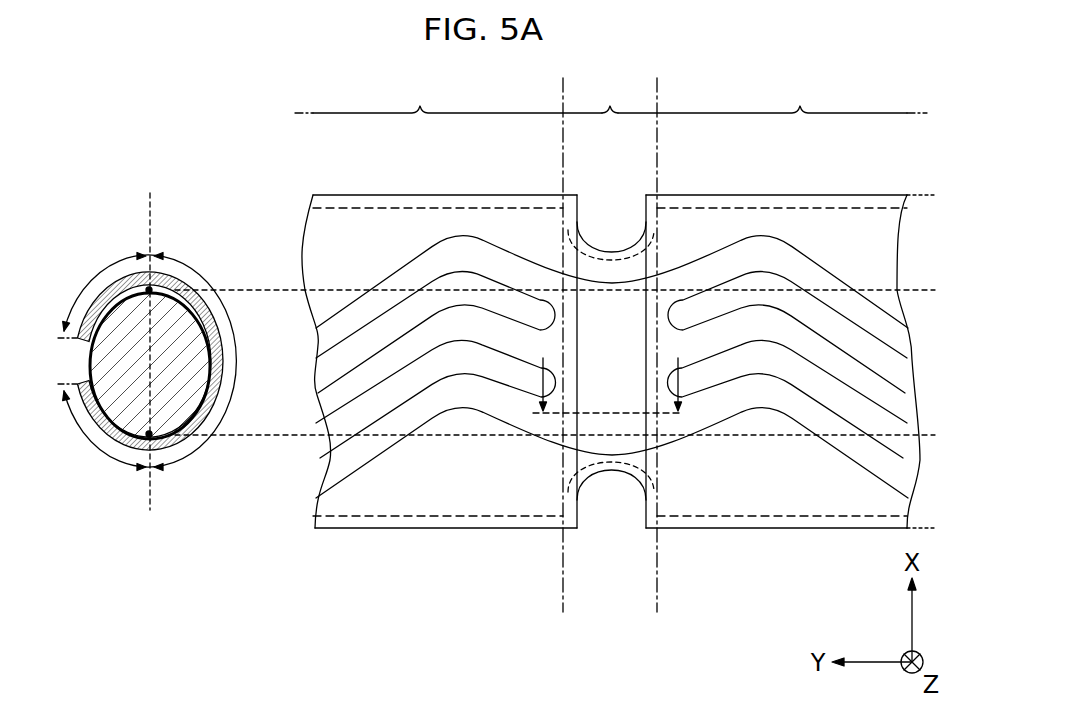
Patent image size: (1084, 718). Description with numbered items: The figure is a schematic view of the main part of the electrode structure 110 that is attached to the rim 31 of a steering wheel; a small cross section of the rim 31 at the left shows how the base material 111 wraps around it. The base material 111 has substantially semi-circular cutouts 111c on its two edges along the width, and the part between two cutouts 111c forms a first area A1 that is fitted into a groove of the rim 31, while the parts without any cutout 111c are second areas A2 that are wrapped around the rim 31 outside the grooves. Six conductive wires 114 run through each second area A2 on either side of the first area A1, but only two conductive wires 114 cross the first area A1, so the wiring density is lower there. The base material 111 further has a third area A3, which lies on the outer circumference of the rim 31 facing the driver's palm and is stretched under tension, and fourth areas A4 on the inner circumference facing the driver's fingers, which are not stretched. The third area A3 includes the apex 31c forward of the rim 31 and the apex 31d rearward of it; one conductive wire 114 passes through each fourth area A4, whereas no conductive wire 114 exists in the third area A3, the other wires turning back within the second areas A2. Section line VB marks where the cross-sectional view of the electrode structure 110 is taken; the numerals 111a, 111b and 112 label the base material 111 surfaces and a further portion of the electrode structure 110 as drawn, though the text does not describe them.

The electrode structure 110 is at (190, 283).
The base material 111 is at (433, 193).
The first surface of plate 111a is at (452, 517).
The second surface of plate 111b is at (867, 207).
The cutout 111c is at (638, 230).
The flat portion 112 is at (389, 503).
The conductive wire 114 is at (765, 233).
The rim 31 is at (190, 330).
The apex forward of rim 31c is at (148, 287).
The apex rearward of rim 31d is at (150, 437).
The first area A1 is at (610, 97).
The second area A2 is at (611, 97).
The third area A3 is at (693, 471).
The fourth area A4 is at (568, 464).
The section line VB- VB is at (613, 373).